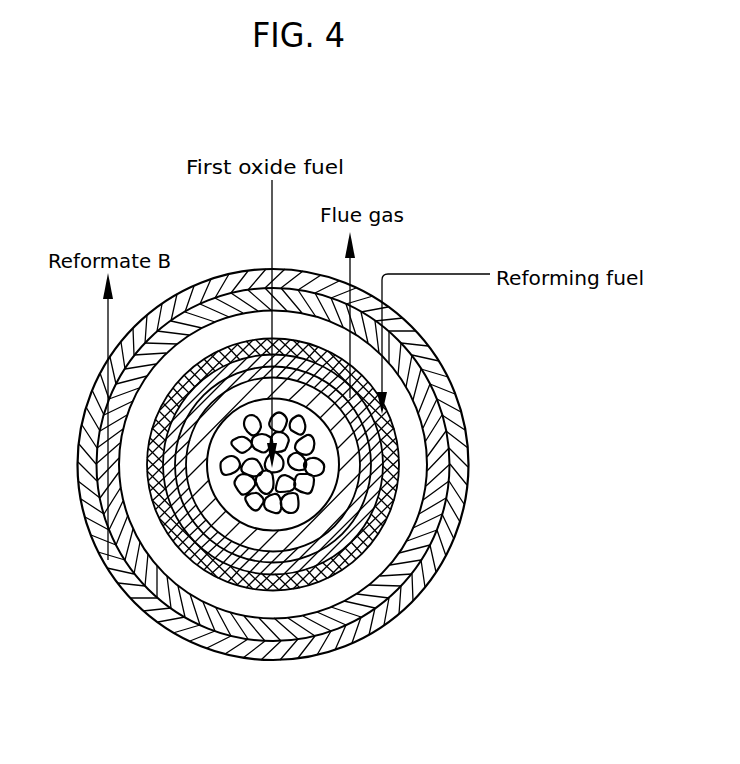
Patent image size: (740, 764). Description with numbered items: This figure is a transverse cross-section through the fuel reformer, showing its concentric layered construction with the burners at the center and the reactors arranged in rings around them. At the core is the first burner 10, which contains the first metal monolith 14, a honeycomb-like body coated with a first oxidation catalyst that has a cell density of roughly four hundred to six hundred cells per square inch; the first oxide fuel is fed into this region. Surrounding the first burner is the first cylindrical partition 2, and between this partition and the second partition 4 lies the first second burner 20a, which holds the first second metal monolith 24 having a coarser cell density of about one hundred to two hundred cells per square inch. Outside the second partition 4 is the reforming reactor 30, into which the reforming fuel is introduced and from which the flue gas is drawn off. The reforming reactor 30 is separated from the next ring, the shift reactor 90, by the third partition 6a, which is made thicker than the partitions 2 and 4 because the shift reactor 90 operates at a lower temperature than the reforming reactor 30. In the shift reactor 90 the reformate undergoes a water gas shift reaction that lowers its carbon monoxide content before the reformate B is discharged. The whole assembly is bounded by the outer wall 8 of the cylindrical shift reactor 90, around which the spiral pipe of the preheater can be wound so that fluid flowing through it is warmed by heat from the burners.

The outer wall 8 is at (114, 580).
The shift reactor 90 is at (458, 419).
The first second metal monolith 24 is at (400, 482).
The reforming reactor 30 is at (413, 461).
The first second burner 20a is at (370, 528).
The first metal monolith 14 is at (367, 587).
The second partition 4 is at (206, 575).
The first cylindrical partition 2 is at (250, 532).
The third partition 6a is at (185, 562).
The first burner 10 is at (288, 521).